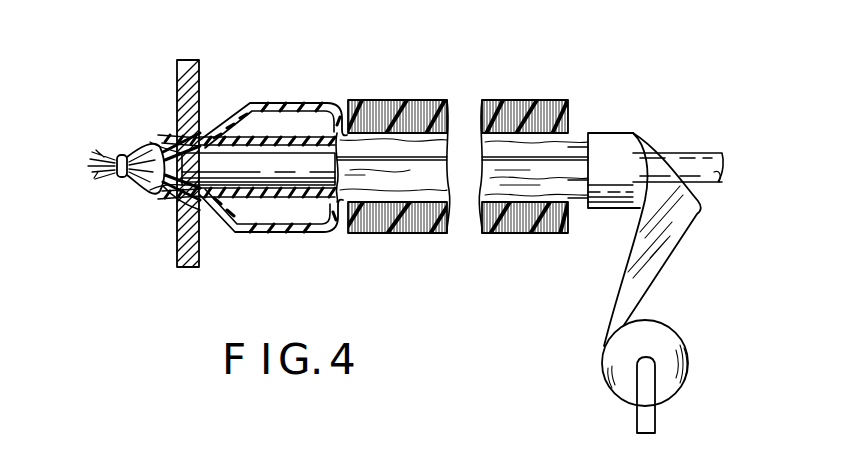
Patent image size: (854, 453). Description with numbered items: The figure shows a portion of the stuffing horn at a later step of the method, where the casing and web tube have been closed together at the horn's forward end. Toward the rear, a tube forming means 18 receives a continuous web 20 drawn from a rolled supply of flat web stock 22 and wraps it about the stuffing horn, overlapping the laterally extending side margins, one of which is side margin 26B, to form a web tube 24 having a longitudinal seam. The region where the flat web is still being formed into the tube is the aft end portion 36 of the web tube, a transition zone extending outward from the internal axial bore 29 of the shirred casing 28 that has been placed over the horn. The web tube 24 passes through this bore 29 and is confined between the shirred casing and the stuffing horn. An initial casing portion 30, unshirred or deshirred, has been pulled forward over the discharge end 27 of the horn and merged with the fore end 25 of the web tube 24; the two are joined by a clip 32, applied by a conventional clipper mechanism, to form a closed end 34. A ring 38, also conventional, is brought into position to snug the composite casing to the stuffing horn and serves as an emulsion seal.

The tube forming means 18 is at (612, 186).
The continuous web 20 is at (655, 263).
The rolled supply of flat web stock 22 is at (688, 358).
The web tube 24 is at (268, 198).
The fore end 25 is at (164, 196).
The side margin 26B is at (548, 150).
The discharge end 27 is at (172, 206).
The shirred casing 28 is at (493, 100).
The internal axial bore 29 is at (362, 198).
The casing portion 30 is at (160, 138).
The clip 32 is at (121, 179).
The closed end 34 is at (115, 135).
The aft end portion 36 is at (693, 122).
The ring 38 is at (203, 95).